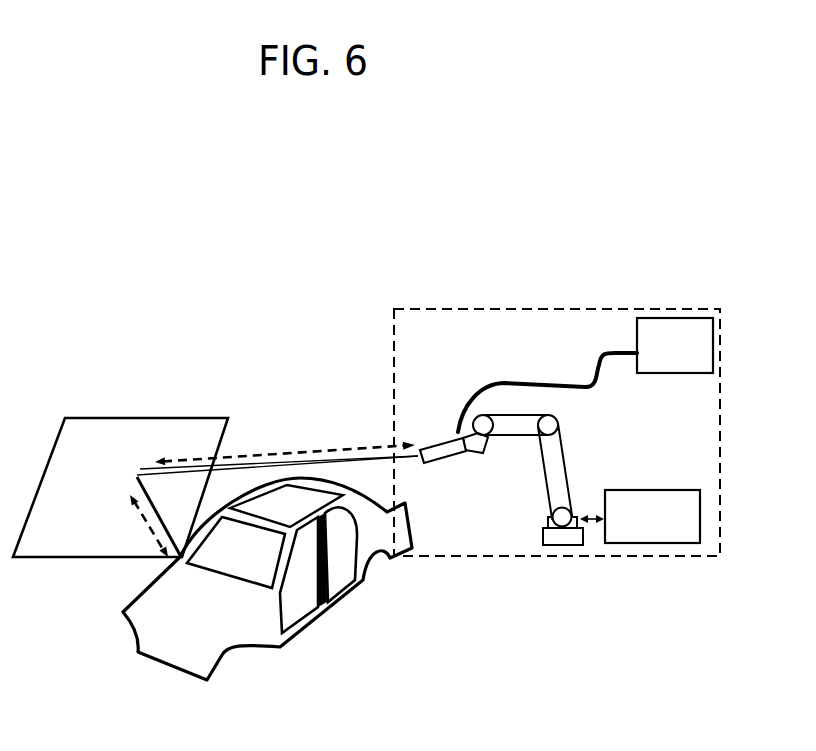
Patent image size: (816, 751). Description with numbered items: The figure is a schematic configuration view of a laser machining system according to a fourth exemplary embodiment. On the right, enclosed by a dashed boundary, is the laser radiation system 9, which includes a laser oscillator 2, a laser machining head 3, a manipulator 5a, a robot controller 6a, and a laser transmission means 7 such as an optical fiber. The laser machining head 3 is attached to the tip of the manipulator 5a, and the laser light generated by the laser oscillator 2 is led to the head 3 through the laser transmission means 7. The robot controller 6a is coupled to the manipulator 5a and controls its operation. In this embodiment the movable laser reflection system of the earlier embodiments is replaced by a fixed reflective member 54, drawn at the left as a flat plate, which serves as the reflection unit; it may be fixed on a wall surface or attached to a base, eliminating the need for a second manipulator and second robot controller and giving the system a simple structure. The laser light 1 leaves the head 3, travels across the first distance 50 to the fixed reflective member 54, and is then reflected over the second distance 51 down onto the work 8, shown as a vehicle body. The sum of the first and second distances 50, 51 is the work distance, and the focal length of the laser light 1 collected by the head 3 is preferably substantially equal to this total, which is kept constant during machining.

The laser light 1 is at (285, 463).
The laser oscillator 2 is at (675, 345).
The laser machining head 3 is at (440, 438).
The manipulator 5a is at (565, 462).
The robot controller 6a is at (640, 516).
The laser transmission means 7 is at (545, 382).
The work 8 is at (305, 633).
The laser radiation system 9 is at (557, 419).
The first distance 50 is at (297, 447).
The second distance 51 is at (152, 533).
The fixed reflective member 54 is at (117, 416).